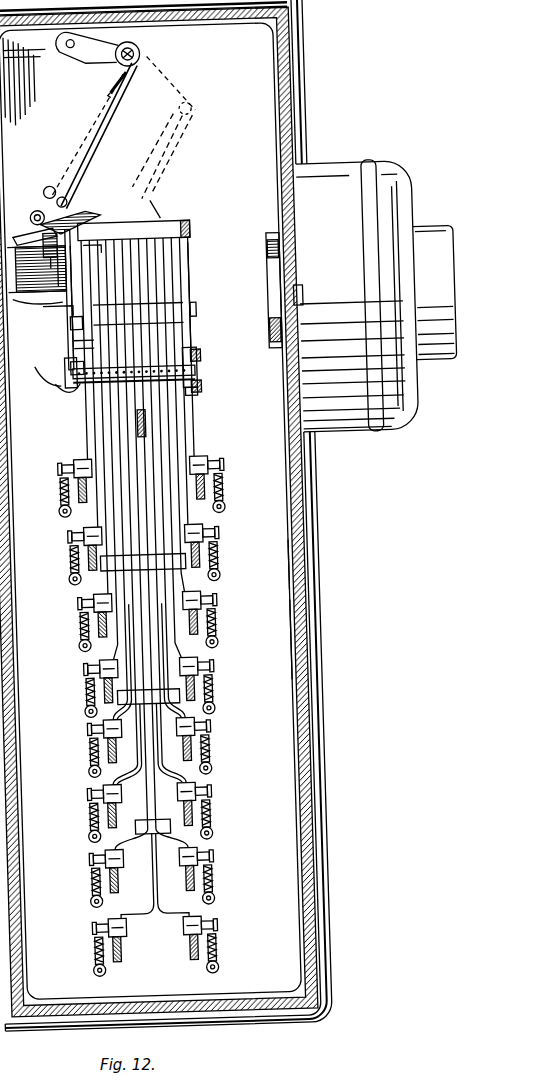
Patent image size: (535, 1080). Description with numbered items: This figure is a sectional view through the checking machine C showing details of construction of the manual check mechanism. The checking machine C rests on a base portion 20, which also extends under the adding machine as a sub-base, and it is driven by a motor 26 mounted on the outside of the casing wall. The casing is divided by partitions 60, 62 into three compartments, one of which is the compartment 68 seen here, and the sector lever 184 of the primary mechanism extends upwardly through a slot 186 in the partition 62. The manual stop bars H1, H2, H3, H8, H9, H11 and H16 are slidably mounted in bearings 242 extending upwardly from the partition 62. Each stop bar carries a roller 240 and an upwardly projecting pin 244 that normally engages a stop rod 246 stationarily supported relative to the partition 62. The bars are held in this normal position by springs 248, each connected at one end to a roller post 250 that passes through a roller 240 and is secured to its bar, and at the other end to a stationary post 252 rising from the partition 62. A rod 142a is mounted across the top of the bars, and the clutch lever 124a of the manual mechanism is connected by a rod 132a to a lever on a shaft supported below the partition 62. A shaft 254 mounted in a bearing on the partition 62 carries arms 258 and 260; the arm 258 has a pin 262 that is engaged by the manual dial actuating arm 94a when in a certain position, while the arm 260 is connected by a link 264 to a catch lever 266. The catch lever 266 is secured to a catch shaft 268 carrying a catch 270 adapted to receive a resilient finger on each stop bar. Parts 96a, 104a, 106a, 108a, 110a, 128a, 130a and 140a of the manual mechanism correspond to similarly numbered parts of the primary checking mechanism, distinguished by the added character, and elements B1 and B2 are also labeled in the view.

The base portion 20 is at (319, 1015).
The motor 26 is at (377, 294).
The partition 60 is at (10, 372).
The partition 62 is at (151, 556).
The compartment 68 is at (277, 639).
The manual dial actuating arm 94a is at (98, 145).
The lever 96a is at (158, 48).
The latch 104a is at (126, 92).
The link 106a is at (188, 74).
The link 108a is at (185, 149).
The link 110a is at (172, 157).
The clutch lever 124a is at (36, 269).
The coil spring 128a is at (88, 222).
The contact 130a is at (35, 237).
The rod 132a is at (54, 317).
The nut 140a is at (80, 380).
The rod 142a is at (72, 380).
The sector lever 184 is at (275, 343).
The slot 186 is at (275, 260).
The roller 240 is at (208, 655).
The bearings 242 is at (199, 224).
The pin 244 is at (196, 350).
The stop rod 246 is at (203, 390).
The springs 248 is at (217, 617).
The roller post 250 is at (226, 463).
The stationary post 252 is at (221, 573).
The shaft 254 is at (45, 204).
The arm 258 is at (78, 196).
The arm 260 is at (88, 210).
The pin 262 is at (58, 180).
The link 264 is at (37, 295).
The catch lever 266 is at (77, 318).
The catch shaft 268 is at (203, 311).
The catch 270 is at (157, 319).
The checking machine C is at (282, 572).
The binding post B1 is at (78, 507).
The binding post B2 is at (92, 573).
The manual stop bar H1 is at (88, 296).
The manual stop bar H2 is at (95, 343).
The manual stop bar H3 is at (100, 418).
The manual stop bar H8 is at (140, 902).
The manual stop bar H9 is at (155, 912).
The manual stop bar H11 is at (163, 216).
The manual stop bar H16 is at (198, 277).